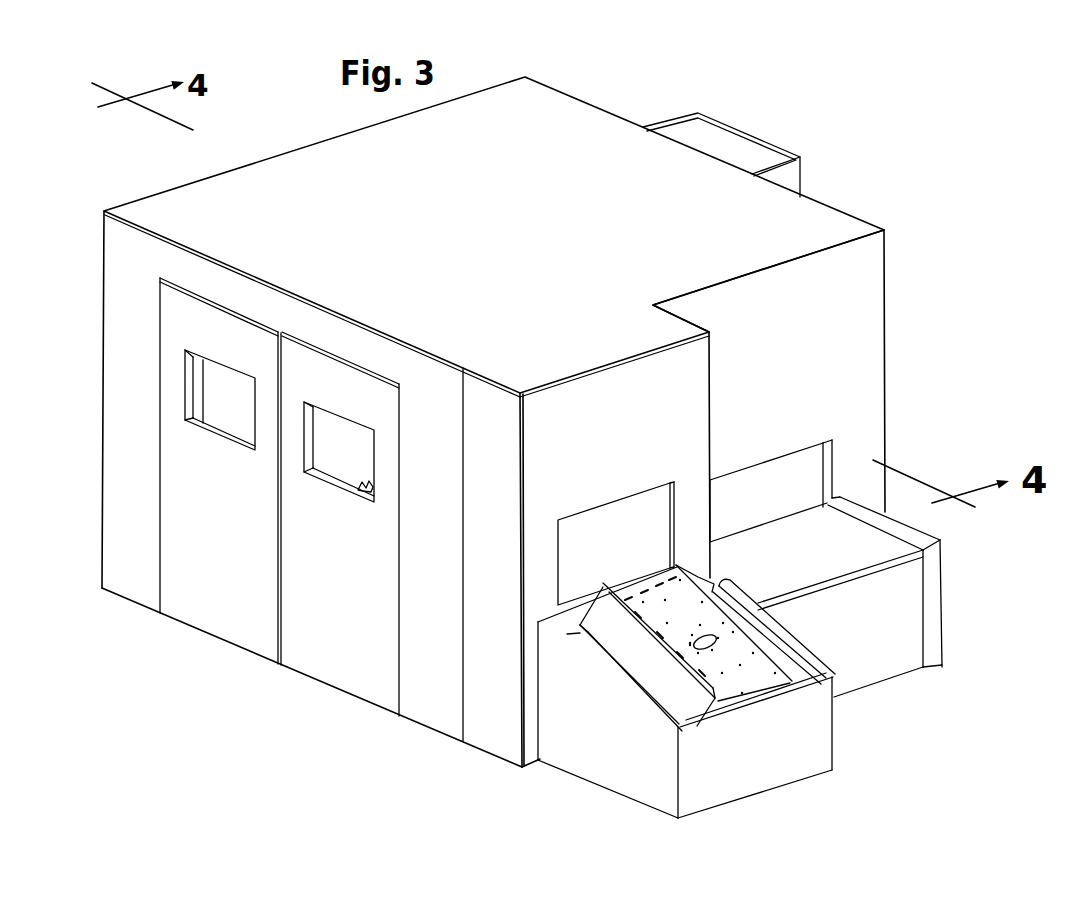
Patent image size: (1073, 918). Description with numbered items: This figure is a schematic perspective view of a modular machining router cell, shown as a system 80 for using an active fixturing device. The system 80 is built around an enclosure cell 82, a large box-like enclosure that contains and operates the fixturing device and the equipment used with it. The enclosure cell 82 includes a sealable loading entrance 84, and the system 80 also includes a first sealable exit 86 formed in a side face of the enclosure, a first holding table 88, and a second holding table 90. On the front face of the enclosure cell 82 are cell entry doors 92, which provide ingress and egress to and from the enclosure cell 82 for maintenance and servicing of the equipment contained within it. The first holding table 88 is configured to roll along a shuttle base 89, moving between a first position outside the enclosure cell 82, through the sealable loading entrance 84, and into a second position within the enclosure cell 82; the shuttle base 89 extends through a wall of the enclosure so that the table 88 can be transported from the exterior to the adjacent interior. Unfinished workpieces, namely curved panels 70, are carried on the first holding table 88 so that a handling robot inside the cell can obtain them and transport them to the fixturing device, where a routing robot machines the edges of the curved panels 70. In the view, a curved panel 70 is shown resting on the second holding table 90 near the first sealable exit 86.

The system 80 is at (631, 92).
The enclosure cell 82 is at (838, 228).
The sealable loading entrance 84 is at (828, 472).
The first sealable exit 86 is at (562, 540).
The first holding table 88 is at (819, 558).
The shuttle base 89 is at (943, 637).
The second holding table 90 is at (603, 760).
The cell entry doors 92 is at (347, 692).
The curved panels 70 is at (750, 678).